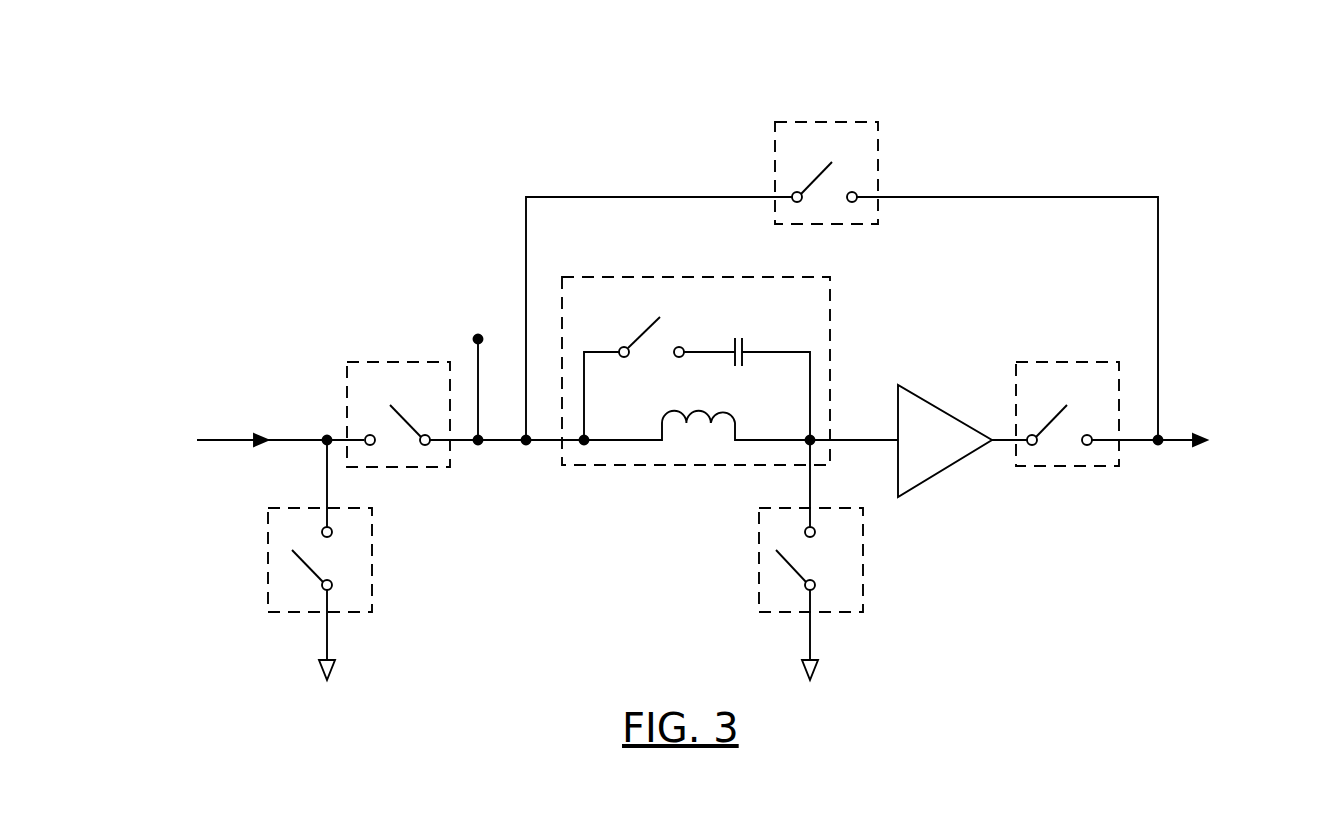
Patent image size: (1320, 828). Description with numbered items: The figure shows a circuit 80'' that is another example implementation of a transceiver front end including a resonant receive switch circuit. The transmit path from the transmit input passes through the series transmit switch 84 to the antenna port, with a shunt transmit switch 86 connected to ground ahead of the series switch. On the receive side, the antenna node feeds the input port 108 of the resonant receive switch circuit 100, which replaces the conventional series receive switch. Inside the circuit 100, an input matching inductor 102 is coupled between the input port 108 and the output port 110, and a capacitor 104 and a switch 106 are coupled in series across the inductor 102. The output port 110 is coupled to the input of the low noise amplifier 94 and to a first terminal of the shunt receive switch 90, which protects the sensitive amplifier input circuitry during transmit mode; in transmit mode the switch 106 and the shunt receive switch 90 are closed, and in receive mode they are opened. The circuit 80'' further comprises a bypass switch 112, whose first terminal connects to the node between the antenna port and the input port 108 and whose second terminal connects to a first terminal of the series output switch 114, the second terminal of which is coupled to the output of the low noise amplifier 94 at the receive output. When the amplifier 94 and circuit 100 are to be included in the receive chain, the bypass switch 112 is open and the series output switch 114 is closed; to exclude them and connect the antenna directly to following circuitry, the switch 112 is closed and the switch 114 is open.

The circuit 80'' is at (701, 256).
The series transmit switch 84 is at (364, 361).
The shunt transmit switch 86 is at (293, 508).
The shunt receive switch 90 is at (786, 507).
The low noise amplifier 94 is at (922, 397).
The resonant receive switch circuit 100 is at (633, 277).
The input matching inductor 102 is at (693, 408).
The capacitor 104 is at (743, 336).
The switch 106 is at (636, 330).
The input port 108 is at (558, 443).
The output port 110 is at (832, 440).
The bypass switch 112 is at (803, 120).
The series output switch 114 is at (1043, 362).